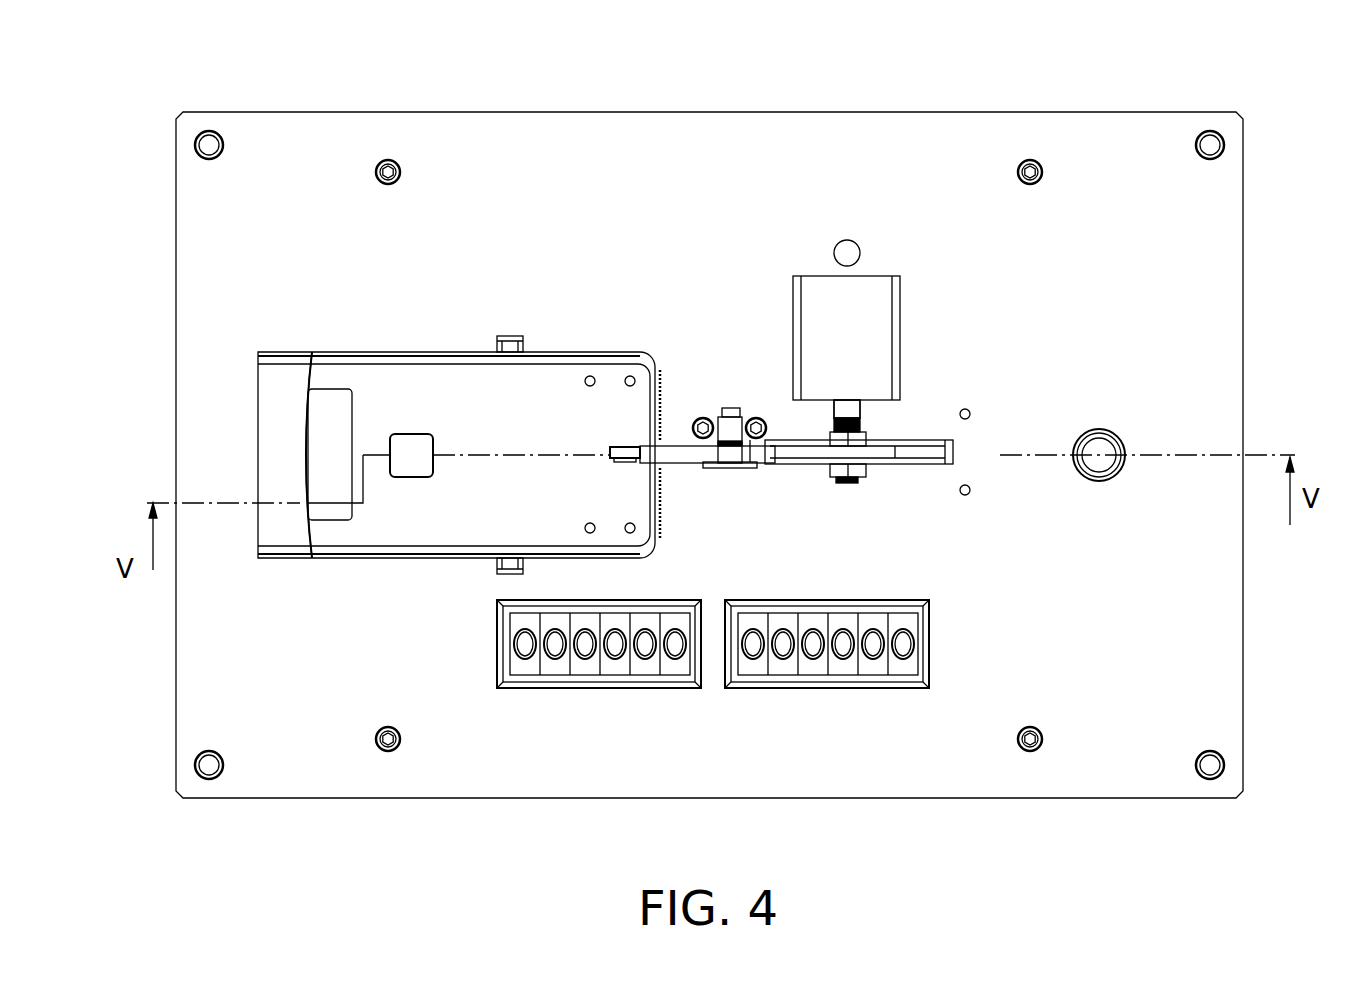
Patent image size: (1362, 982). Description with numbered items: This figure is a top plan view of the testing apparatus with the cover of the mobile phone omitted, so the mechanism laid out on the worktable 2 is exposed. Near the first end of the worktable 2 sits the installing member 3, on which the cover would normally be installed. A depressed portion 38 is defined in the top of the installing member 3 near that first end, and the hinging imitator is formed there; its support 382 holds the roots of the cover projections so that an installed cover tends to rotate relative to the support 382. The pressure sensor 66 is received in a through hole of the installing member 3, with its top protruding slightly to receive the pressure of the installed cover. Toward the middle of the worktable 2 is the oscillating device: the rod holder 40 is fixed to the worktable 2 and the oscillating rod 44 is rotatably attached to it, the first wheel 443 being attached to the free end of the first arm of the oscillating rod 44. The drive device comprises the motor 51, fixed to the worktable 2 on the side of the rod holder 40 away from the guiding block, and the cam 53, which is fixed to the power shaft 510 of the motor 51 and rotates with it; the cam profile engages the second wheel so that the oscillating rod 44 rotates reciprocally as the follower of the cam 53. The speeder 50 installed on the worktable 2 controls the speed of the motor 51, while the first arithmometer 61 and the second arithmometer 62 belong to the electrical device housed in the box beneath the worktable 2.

The worktable 2 is at (340, 153).
The installing member 3 is at (392, 398).
The depressed portion 38 is at (325, 418).
The support 382 is at (305, 452).
The rod holder 40 is at (735, 410).
The oscillating rod 44 is at (677, 452).
The first wheel 443 is at (613, 447).
The speeder 50 is at (1110, 445).
The motor 51 is at (875, 300).
The power shaft 510 is at (870, 405).
The cam 53 is at (926, 460).
The first arithmometer 61 is at (615, 668).
The second arithmometer 62 is at (880, 665).
The pressure sensor 66 is at (415, 470).